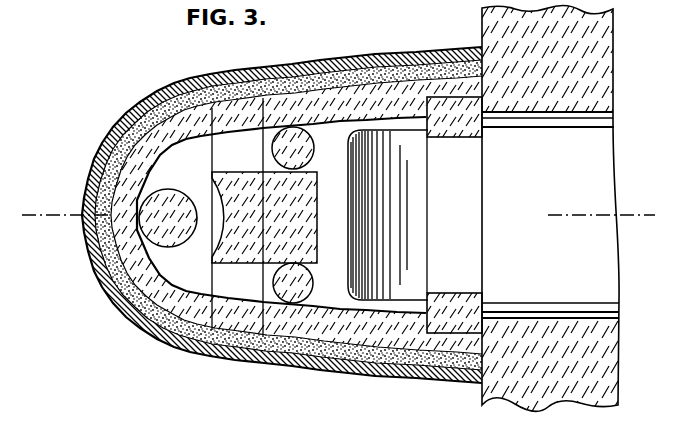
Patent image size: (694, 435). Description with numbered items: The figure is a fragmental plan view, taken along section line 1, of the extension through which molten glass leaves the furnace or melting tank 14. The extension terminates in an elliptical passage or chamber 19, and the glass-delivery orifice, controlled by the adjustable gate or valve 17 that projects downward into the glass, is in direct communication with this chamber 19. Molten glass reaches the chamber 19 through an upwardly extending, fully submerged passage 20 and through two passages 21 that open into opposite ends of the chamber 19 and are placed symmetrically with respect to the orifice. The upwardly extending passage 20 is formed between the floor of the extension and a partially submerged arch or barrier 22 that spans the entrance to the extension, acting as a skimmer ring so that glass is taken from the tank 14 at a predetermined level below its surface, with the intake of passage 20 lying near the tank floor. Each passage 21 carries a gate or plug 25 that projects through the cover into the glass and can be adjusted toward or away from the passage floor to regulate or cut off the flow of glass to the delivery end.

The longitudinal axis / section line 1 is at (350, 218).
The furnace or melting tank 14 is at (550, 208).
The adjustable gate or valve 17 is at (137, 233).
The elliptical passage or chamber 19 is at (173, 266).
The upwardly extending passage 20 is at (403, 225).
The passages 21 is at (230, 153).
The partially submerged arch or barrier 22 is at (457, 138).
The gate or plug 25 is at (294, 145).